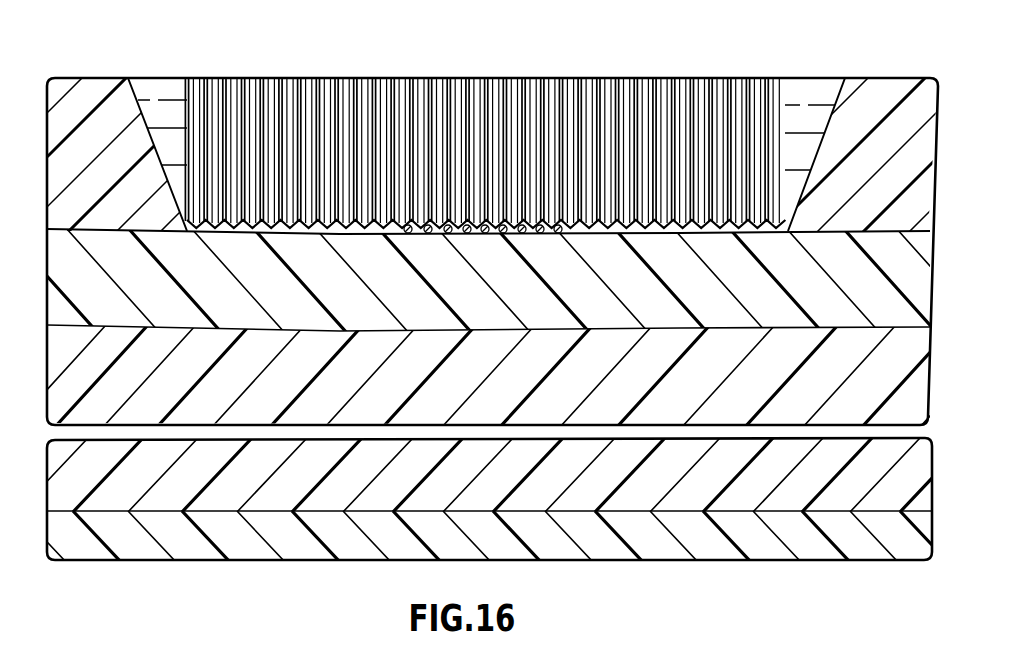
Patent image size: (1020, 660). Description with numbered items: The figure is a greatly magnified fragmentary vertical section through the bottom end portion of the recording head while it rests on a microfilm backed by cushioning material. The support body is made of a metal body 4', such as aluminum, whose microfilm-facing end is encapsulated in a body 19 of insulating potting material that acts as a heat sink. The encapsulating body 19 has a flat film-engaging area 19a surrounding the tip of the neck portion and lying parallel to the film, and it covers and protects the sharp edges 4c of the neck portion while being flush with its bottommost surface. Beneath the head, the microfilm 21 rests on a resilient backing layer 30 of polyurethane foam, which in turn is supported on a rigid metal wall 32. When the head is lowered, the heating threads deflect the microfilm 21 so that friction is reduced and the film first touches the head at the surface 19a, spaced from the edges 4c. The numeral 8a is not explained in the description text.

The encapsulating body 19 is at (93, 92).
The body of metal 4' is at (486, 114).
The sharp edges 4c is at (187, 232).
The flat film-engaging area 19a is at (153, 232).
The intermediate layer 8a is at (832, 233).
The microfilm 21 is at (63, 300).
The resilient backing layer 30 is at (638, 500).
The rigid metal wall 32 is at (772, 543).